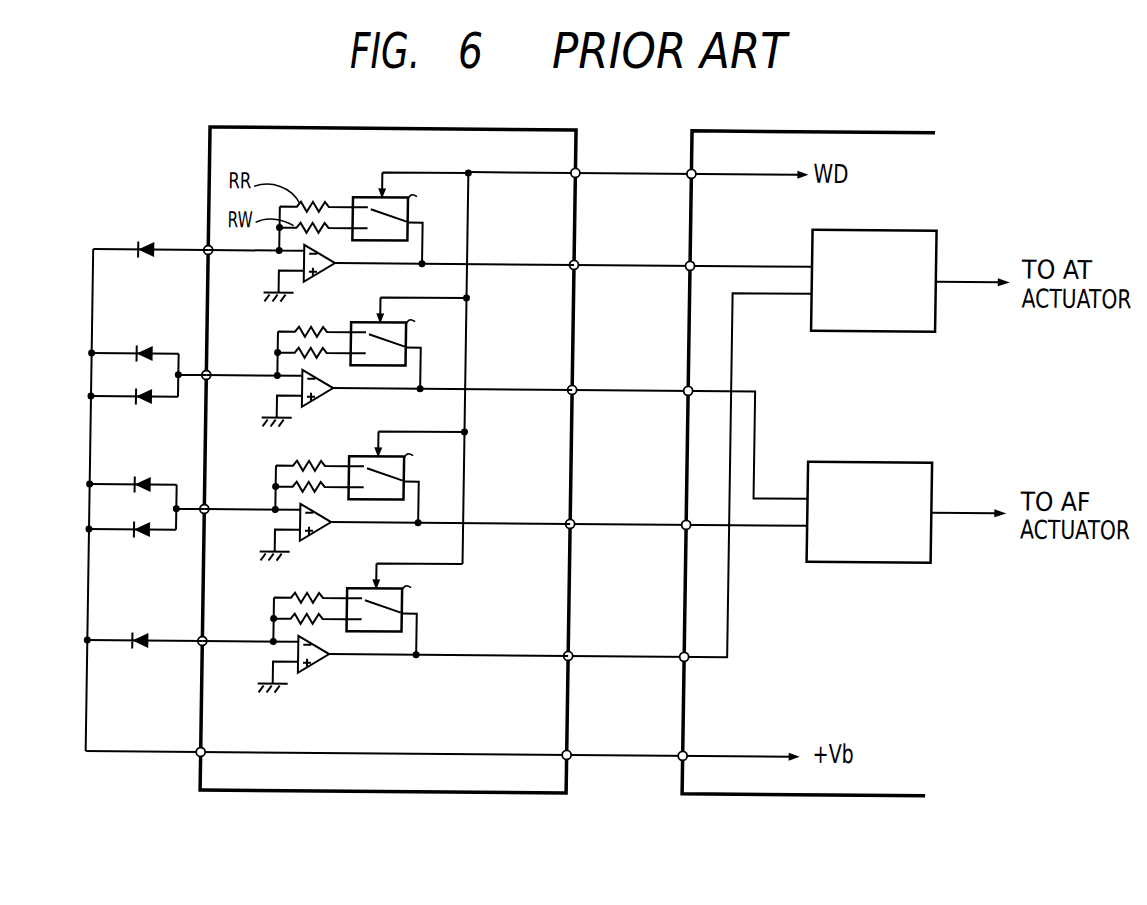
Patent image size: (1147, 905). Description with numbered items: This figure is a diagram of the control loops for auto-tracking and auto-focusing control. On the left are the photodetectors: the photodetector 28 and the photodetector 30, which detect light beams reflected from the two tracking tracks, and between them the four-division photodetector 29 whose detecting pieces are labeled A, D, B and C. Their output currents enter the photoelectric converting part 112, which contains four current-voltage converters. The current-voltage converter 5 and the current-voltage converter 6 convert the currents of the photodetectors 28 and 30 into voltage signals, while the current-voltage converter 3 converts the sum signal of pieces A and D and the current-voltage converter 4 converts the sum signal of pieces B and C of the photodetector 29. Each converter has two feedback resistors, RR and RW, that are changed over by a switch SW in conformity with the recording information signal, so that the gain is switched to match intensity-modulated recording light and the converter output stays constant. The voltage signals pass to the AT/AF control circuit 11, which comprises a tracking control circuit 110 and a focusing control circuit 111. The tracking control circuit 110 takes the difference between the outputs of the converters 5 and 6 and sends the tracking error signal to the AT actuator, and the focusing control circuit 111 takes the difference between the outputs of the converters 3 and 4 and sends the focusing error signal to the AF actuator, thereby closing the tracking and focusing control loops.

The photodetector 28 is at (149, 242).
The four-division photodetector 29 is at (82, 363).
The photodetector 30 is at (145, 649).
The current-voltage converter 5 is at (391, 242).
The current-voltage converter 3 is at (389, 367).
The current-voltage converter 4 is at (387, 501).
The current-voltage converter 6 is at (385, 634).
The tracking control circuit 110 is at (904, 224).
The focusing control circuit 111 is at (898, 456).
The photoelectric converting part 112 is at (255, 792).
The AT/AF control circuit 11 is at (783, 792).